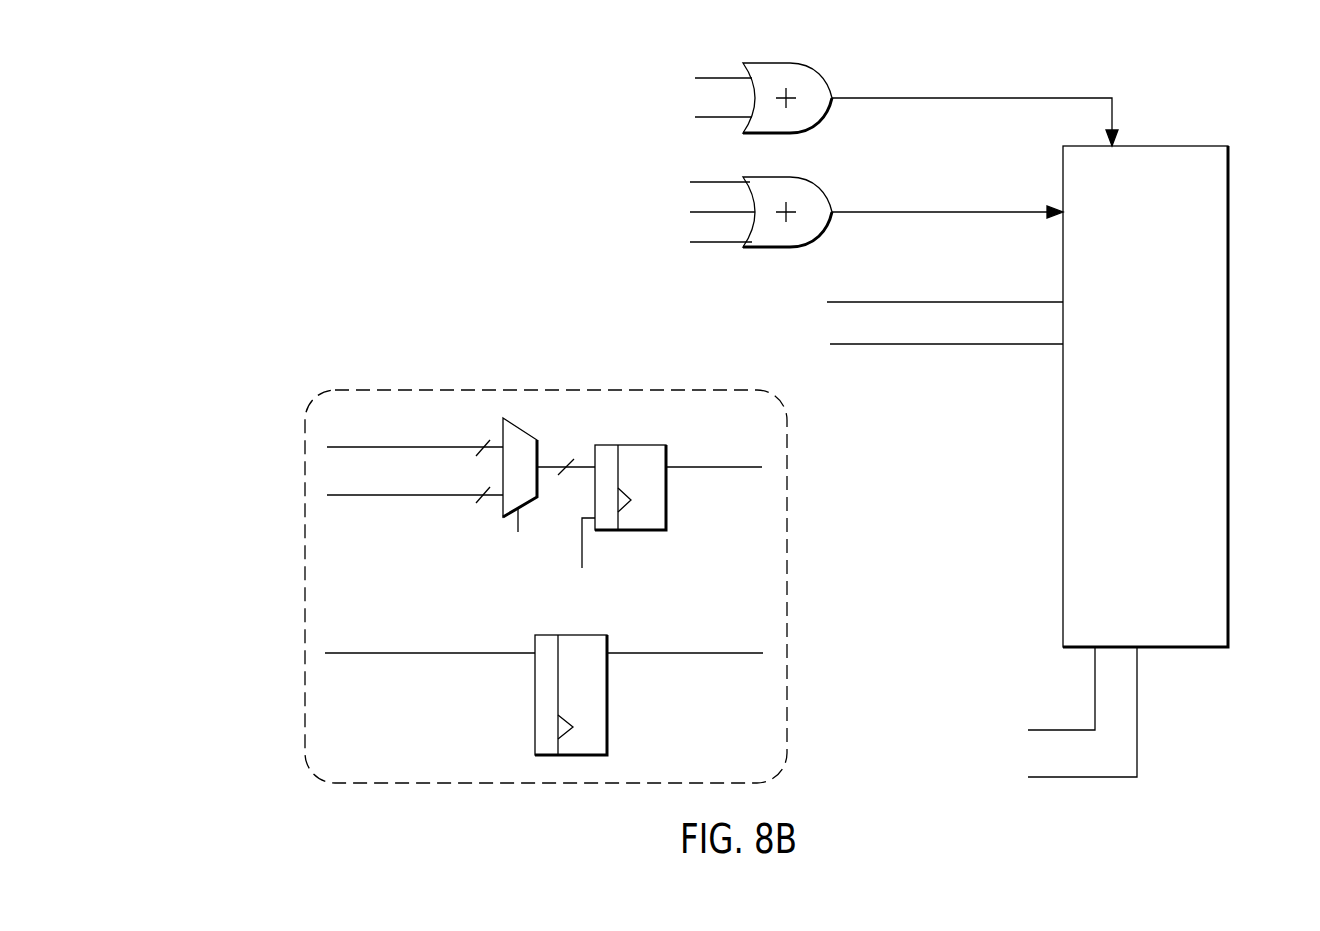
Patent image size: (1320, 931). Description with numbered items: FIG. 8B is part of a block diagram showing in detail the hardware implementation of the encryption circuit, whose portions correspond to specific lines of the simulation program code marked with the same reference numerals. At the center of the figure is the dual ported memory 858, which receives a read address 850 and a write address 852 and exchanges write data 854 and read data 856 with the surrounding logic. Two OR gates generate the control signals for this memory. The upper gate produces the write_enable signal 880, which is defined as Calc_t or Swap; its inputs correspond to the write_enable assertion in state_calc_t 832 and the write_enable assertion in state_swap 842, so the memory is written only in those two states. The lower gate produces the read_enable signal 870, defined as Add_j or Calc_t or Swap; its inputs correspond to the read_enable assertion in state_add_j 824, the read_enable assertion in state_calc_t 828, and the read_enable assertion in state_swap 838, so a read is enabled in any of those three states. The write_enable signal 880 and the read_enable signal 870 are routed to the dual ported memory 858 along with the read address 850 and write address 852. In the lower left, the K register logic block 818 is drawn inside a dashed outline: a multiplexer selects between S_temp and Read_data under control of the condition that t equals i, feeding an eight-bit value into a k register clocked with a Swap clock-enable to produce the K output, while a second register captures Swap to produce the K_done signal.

The write_enable signal 880 is at (333, 78).
The read_enable signal 870 is at (288, 193).
The write_enable assertion in state_calc_t 832 is at (710, 77).
The write_enable assertion in state_swap 842 is at (712, 115).
The read_enable assertion in state_add_j 824 is at (714, 181).
The read_enable assertion in state_calc_t 828 is at (712, 211).
The read_enable assertion in state_swap 838 is at (708, 245).
The dual ported memory 858 is at (1190, 145).
The read_addr signal 850 is at (675, 298).
The write_addr signal 852 is at (675, 340).
The write_data signal 854 is at (928, 713).
The read data 856 is at (922, 763).
The K register logic block 818 is at (787, 447).